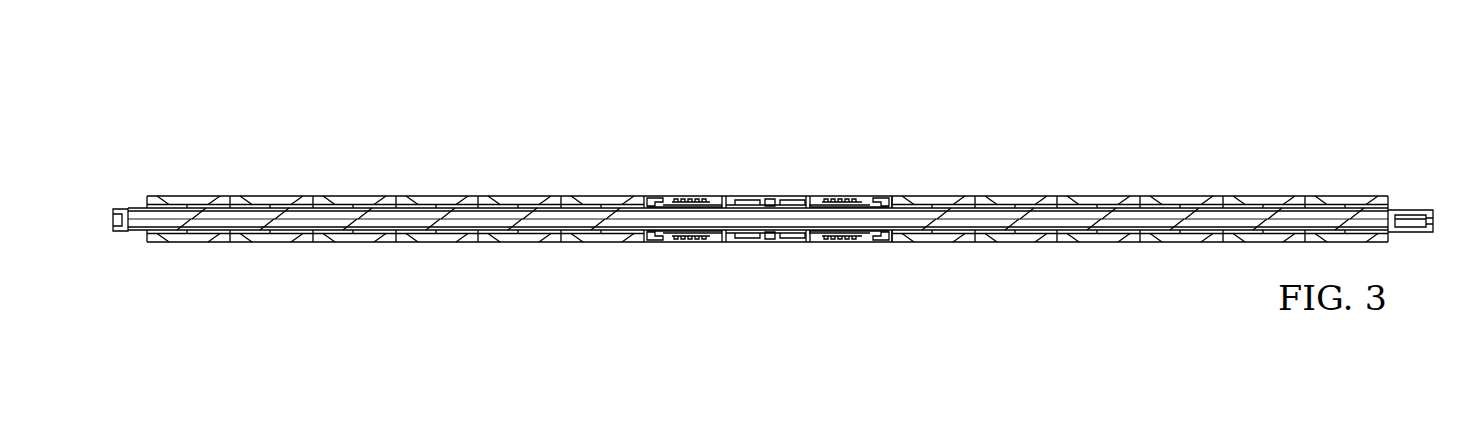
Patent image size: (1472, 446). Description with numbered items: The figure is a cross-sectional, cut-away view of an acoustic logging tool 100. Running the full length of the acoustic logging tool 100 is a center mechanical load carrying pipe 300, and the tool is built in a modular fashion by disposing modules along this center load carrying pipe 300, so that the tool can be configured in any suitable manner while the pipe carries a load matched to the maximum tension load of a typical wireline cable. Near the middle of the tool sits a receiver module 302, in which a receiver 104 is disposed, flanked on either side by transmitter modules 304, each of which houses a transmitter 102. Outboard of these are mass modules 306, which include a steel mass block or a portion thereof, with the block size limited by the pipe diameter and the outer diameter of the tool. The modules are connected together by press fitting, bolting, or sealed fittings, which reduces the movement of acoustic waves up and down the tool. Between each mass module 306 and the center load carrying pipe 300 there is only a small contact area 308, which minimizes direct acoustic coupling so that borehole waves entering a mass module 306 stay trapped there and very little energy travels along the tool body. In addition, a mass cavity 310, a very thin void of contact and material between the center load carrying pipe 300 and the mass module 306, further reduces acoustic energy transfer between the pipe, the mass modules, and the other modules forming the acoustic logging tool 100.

The acoustic logging tool 100 is at (426, 86).
The transmitter 102 is at (697, 196).
The receiver 104 is at (760, 196).
The center mechanical load carrying pipe 300 is at (1425, 212).
The receiver module 302 is at (788, 173).
The transmitter module 304 is at (652, 174).
The mass module 306 is at (358, 203).
The contact area 308 is at (522, 206).
The mass cavity 310 is at (600, 203).